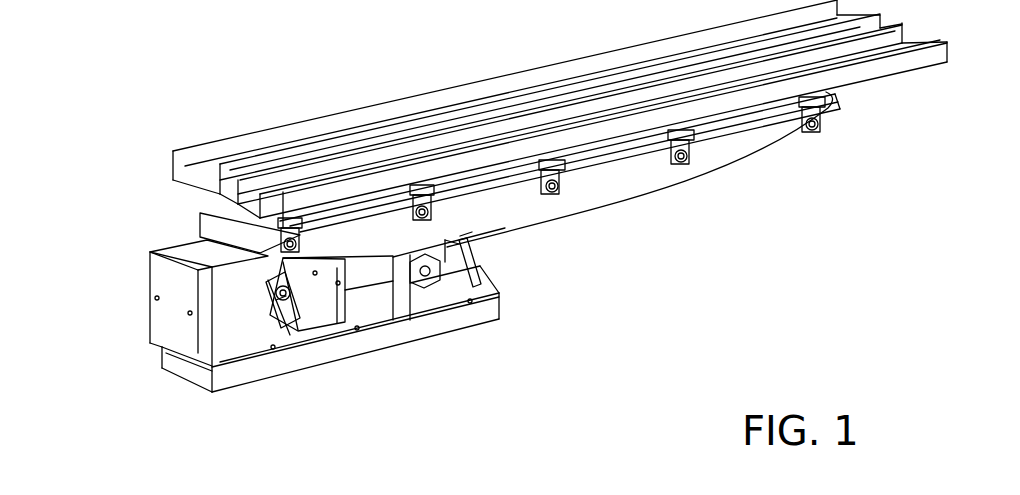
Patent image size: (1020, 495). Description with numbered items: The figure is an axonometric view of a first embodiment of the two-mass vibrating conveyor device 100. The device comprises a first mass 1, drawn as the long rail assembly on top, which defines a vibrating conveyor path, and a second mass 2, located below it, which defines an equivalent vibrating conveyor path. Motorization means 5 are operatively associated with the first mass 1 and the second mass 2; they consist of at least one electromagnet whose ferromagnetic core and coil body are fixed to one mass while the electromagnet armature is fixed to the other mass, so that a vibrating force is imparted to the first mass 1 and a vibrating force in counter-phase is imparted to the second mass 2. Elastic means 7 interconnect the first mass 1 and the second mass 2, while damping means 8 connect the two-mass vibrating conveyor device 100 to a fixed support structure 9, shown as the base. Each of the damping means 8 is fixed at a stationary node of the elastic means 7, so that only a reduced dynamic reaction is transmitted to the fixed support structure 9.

The two-mass vibrating conveyor device 100 is at (164, 138).
The first mass 1 is at (596, 183).
The second mass 2 is at (425, 333).
The motorization means 5 is at (377, 289).
The elastic means 7 is at (480, 275).
The damping means 8 is at (497, 243).
The fixed support structure 9 is at (313, 354).